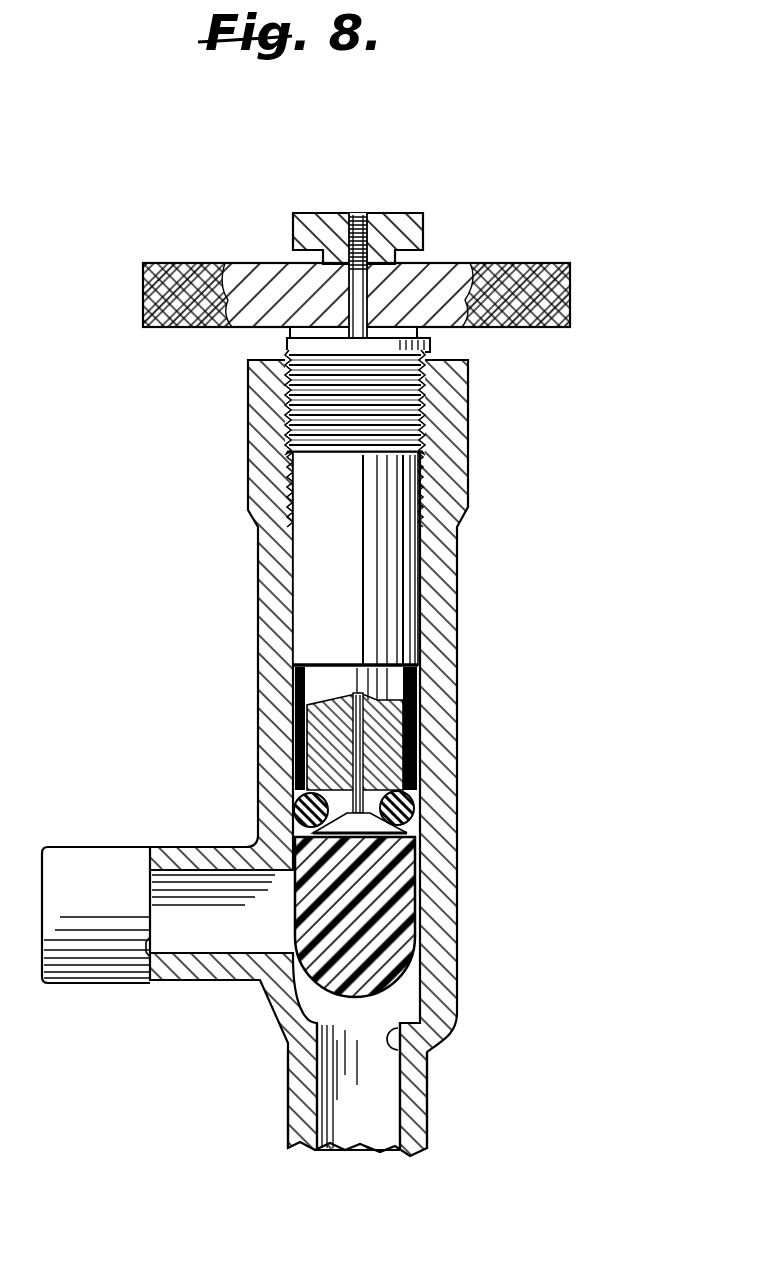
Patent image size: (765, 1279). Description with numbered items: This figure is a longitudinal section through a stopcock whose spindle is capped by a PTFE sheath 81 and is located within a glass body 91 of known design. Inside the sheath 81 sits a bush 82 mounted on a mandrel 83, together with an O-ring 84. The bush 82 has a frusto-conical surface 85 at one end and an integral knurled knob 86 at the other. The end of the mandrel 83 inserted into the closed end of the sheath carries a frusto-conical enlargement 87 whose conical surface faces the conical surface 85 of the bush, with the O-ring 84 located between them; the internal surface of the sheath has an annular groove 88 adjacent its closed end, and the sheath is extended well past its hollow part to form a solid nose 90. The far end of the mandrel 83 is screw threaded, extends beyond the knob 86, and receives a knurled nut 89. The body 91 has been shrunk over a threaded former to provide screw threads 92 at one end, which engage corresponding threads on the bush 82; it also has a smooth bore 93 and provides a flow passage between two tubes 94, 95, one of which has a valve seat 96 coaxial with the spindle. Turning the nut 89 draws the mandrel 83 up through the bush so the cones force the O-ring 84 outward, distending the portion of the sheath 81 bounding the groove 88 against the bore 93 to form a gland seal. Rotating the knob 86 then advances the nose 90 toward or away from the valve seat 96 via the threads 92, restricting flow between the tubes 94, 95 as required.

The PTFE sheath 81 is at (410, 700).
The bush 82 is at (400, 633).
The mandrel 83 is at (357, 310).
The O-ring 84 is at (418, 807).
The frusto-conical surface 85 is at (312, 778).
The knurled knob 86 is at (560, 263).
The frusto-conical enlargement 87 is at (405, 860).
The annular groove 88 is at (300, 832).
The nut 89 is at (423, 213).
The solid nose 90 is at (400, 930).
The glass body 91 is at (443, 553).
The screw threads 92 is at (418, 472).
The smooth bore 93 is at (420, 730).
The tube 94 is at (300, 1090).
The tube 95 is at (130, 830).
The valve seat 96 is at (407, 1057).